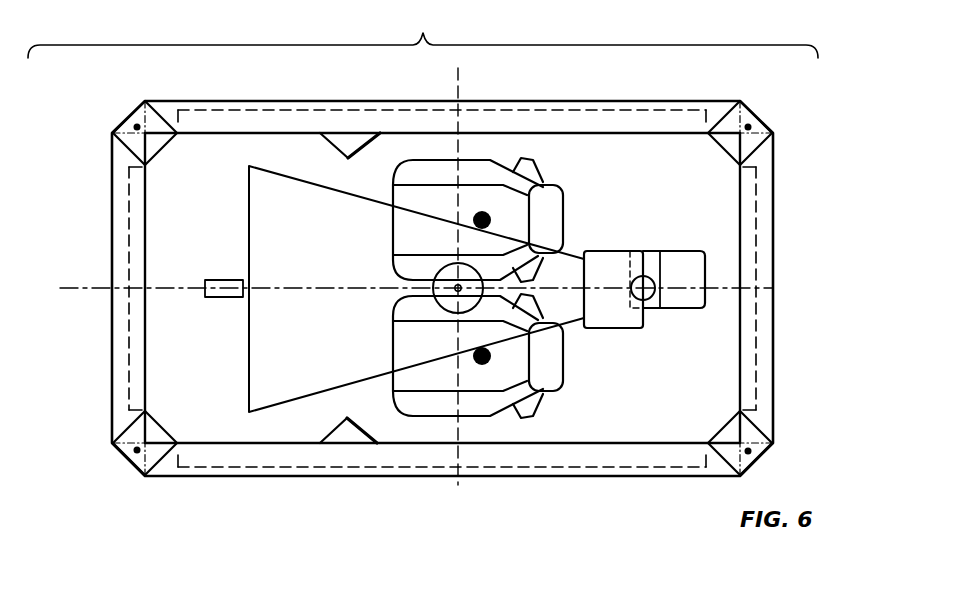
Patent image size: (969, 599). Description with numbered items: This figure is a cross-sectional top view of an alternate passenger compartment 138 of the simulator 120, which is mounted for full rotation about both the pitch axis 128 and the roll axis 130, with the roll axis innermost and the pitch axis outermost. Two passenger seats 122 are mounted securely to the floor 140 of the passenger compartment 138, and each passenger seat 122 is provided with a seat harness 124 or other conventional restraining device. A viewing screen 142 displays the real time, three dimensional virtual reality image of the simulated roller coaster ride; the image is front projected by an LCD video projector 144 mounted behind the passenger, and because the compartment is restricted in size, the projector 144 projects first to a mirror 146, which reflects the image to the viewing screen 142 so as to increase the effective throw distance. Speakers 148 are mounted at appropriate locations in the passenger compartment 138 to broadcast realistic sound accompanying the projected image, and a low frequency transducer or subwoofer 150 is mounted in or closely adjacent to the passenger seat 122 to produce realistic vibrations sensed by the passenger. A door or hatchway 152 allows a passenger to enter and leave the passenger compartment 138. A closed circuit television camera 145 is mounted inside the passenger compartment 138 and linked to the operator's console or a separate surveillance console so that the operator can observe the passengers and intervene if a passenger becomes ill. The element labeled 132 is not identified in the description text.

The simulator 120 is at (423, 31).
The passenger seat 122 is at (543, 210).
The seat harness 124 is at (533, 417).
The pitch axis 128 is at (474, 86).
The roll axis 130 is at (98, 288).
The pivot 132 is at (456, 287).
The passenger compartment 138 is at (693, 365).
The floor 140 is at (221, 431).
The viewing screen 142 is at (243, 217).
The LCD video projector 144 is at (653, 267).
The closed circuit television camera 145 is at (229, 306).
The mirror 146 is at (605, 269).
The speakers 148 is at (347, 147).
The subwoofer 150 is at (420, 305).
The hatchway 152 is at (240, 127).